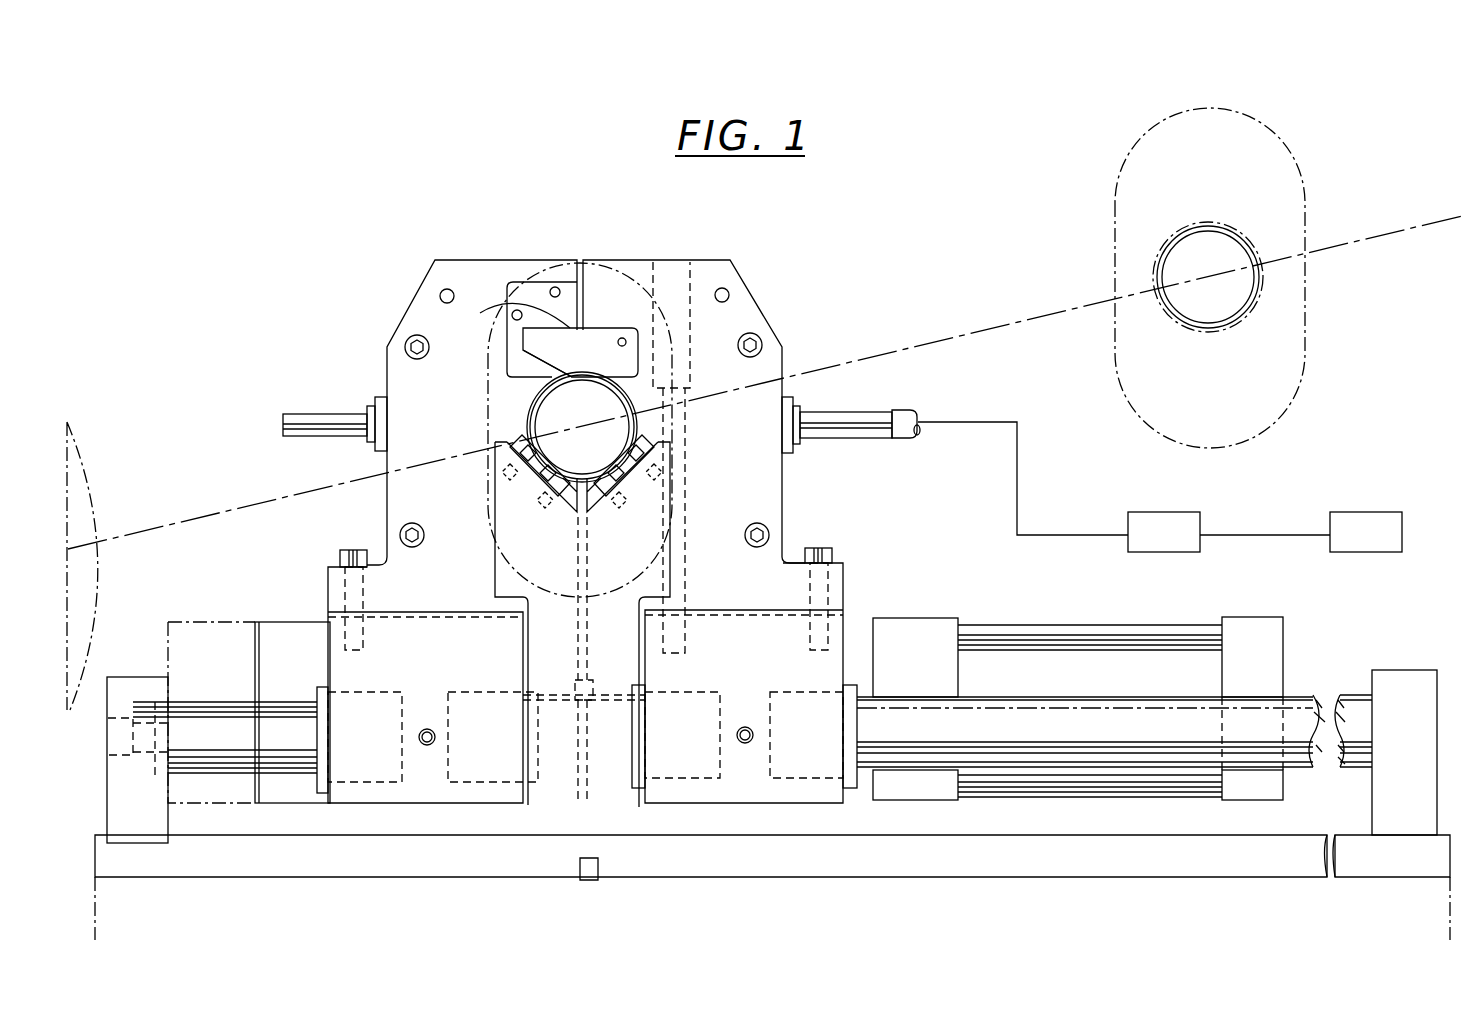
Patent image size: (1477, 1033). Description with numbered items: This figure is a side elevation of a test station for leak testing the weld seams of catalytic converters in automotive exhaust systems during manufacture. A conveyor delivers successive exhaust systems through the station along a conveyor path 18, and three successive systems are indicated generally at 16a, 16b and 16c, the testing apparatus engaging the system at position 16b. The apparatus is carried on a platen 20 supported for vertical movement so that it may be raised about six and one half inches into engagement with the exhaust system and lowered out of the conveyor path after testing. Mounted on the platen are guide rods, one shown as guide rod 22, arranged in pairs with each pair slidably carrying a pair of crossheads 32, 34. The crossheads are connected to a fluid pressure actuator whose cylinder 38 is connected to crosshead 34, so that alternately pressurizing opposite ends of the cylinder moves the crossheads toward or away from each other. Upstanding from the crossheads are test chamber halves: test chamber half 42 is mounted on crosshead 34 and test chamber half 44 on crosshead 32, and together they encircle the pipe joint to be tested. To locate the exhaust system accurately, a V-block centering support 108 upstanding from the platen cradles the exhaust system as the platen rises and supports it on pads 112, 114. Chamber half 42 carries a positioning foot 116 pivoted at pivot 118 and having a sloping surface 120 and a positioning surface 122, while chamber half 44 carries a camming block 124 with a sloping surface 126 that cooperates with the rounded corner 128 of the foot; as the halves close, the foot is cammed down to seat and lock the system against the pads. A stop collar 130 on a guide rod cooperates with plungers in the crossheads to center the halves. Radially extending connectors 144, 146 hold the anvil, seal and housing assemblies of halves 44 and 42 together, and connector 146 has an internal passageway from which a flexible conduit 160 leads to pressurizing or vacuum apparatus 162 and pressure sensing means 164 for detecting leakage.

The exhaust system position 16a is at (1292, 150).
The exhaust system position 16b is at (637, 275).
The exhaust system position 16c is at (95, 440).
The conveyor path 18 is at (866, 347).
The platen 20 is at (1070, 857).
The guide rod 22 is at (1355, 695).
The crosshead 32 is at (481, 676).
The crosshead 34 is at (744, 675).
The cylinder 38 is at (918, 622).
The test chamber half 42 is at (762, 282).
The test chamber half 44 is at (420, 268).
The V-block centering support 108 is at (650, 503).
The pad 112 is at (637, 472).
The pad 114 is at (538, 477).
The positioning foot 116 is at (594, 336).
The pivot 118 is at (624, 340).
The sloping surface 120 is at (540, 365).
The positioning surface 122 is at (607, 375).
The camming block 124 is at (527, 290).
The sloping surface 126 is at (504, 325).
The rounded corner 128 is at (518, 330).
The stop collar 130 is at (586, 682).
The connector 144 is at (326, 414).
The connector 146 is at (838, 440).
The flexible conduit 160 is at (937, 422).
The pressurizing or vacuum apparatus 162 is at (1392, 548).
The pressure sensing means 164 is at (1190, 548).